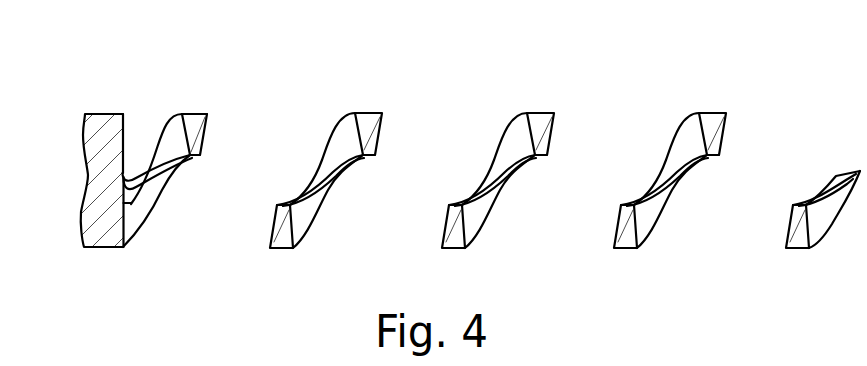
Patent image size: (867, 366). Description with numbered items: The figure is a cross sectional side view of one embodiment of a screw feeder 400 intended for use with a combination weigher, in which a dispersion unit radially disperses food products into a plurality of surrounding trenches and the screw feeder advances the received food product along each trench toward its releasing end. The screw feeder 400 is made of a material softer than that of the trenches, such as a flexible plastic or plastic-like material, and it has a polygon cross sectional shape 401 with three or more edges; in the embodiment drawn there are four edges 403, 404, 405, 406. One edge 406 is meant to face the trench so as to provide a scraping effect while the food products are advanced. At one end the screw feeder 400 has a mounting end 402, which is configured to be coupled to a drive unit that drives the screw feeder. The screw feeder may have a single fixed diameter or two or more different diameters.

The screw feeder 400 is at (659, 92).
The polygon cross sectional shape 401 is at (209, 132).
The mounting end 402 is at (99, 94).
The edge 403 is at (251, 88).
The edge 404 is at (195, 156).
The edge 405 is at (177, 122).
The edge 406 is at (197, 114).